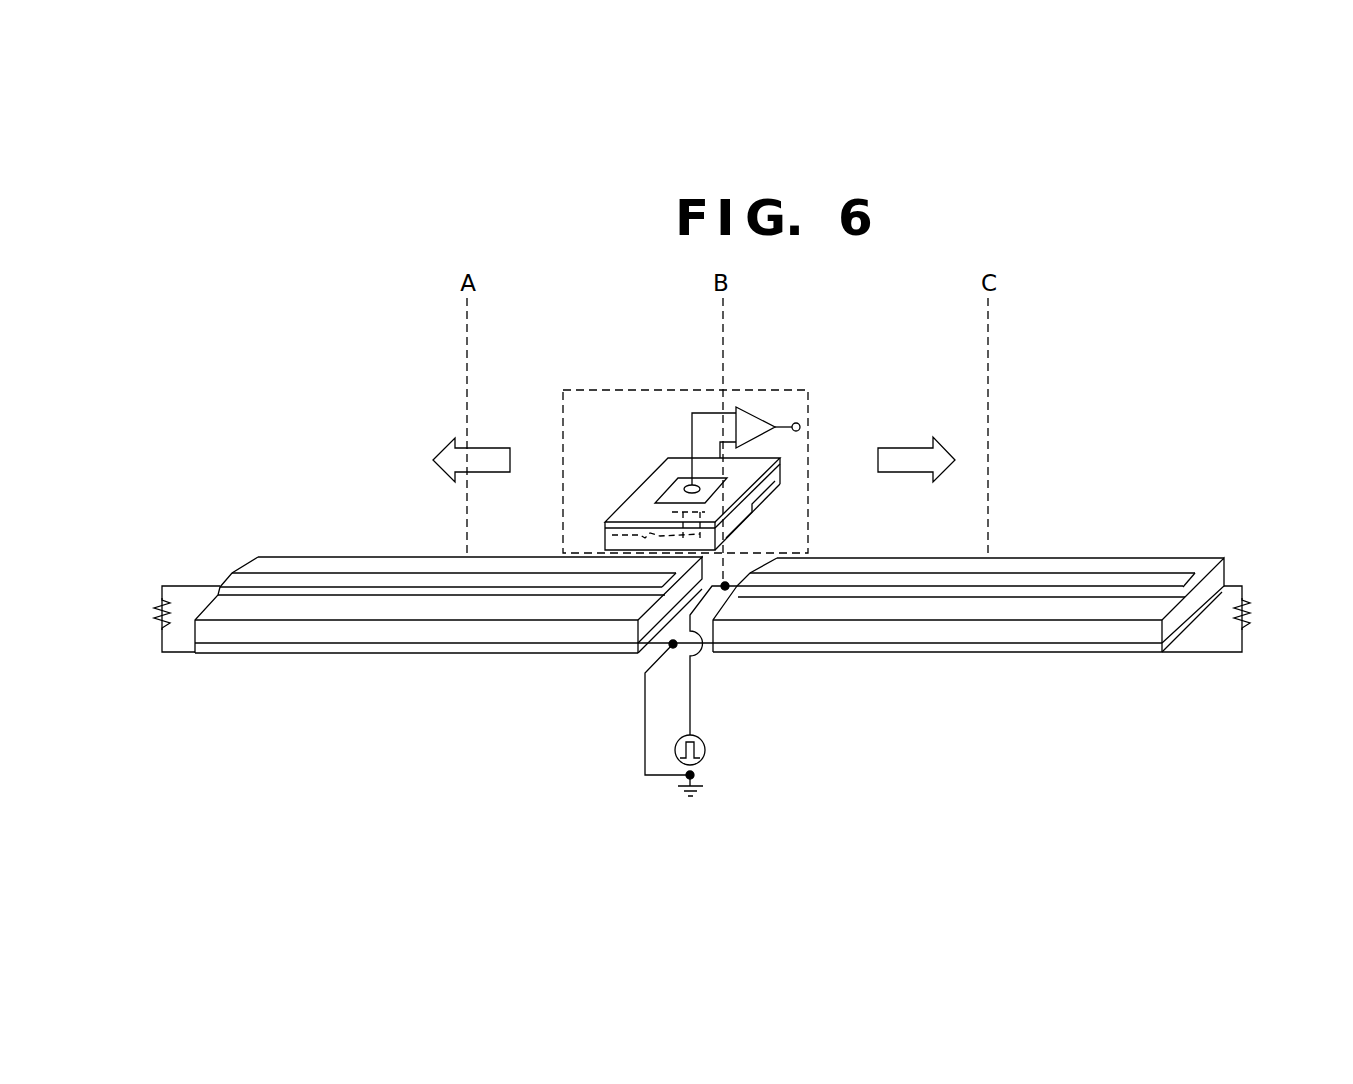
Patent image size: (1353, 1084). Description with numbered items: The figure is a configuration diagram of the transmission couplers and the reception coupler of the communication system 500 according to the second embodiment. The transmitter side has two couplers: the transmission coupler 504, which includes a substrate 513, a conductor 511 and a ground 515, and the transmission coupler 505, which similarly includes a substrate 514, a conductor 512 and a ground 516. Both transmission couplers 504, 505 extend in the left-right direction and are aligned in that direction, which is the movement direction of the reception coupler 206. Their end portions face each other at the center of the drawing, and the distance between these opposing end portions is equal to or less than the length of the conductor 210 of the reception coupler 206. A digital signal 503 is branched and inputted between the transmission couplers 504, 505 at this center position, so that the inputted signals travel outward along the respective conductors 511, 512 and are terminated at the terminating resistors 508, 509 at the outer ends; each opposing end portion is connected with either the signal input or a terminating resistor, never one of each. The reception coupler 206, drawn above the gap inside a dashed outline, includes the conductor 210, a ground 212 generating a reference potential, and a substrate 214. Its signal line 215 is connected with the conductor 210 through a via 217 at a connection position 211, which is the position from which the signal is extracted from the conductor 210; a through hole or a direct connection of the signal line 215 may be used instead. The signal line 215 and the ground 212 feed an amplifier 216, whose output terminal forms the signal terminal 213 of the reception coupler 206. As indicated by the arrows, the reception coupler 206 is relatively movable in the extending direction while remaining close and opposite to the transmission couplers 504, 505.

The communication system 500 is at (1203, 297).
The reception coupler 206 is at (605, 390).
The amplifier 216 is at (755, 405).
The signal line 215 is at (692, 423).
The signal terminal 213 is at (803, 427).
The ground 212 is at (782, 468).
The substrate 214 is at (766, 490).
The conductor 210 is at (748, 525).
The via 217 is at (672, 512).
The connection position 211 is at (605, 529).
The transmission coupler 504 is at (330, 678).
The transmission coupler 505 is at (968, 678).
The conductor 511 is at (325, 585).
The conductor 512 is at (1048, 580).
The substrate 513 is at (450, 632).
The substrate 514 is at (860, 632).
The ground 515 is at (512, 650).
The ground 516 is at (805, 650).
The terminating resistor 508 is at (152, 612).
The terminating resistor 509 is at (1250, 620).
The digital signal 503 is at (705, 748).